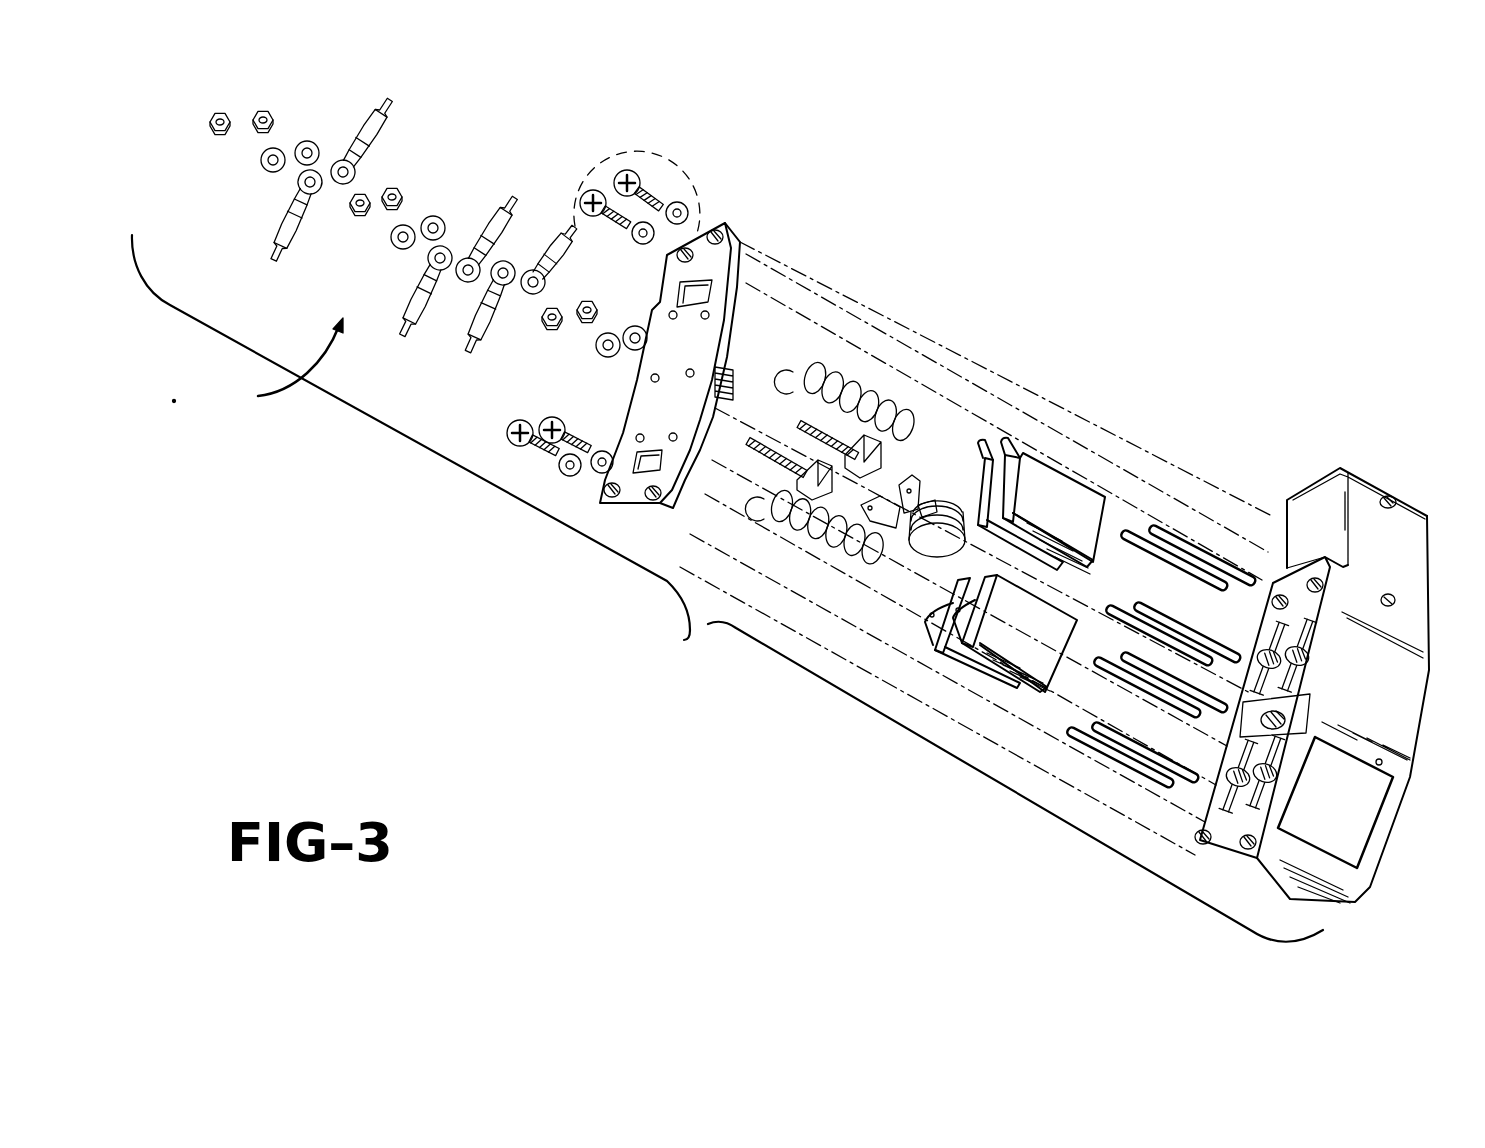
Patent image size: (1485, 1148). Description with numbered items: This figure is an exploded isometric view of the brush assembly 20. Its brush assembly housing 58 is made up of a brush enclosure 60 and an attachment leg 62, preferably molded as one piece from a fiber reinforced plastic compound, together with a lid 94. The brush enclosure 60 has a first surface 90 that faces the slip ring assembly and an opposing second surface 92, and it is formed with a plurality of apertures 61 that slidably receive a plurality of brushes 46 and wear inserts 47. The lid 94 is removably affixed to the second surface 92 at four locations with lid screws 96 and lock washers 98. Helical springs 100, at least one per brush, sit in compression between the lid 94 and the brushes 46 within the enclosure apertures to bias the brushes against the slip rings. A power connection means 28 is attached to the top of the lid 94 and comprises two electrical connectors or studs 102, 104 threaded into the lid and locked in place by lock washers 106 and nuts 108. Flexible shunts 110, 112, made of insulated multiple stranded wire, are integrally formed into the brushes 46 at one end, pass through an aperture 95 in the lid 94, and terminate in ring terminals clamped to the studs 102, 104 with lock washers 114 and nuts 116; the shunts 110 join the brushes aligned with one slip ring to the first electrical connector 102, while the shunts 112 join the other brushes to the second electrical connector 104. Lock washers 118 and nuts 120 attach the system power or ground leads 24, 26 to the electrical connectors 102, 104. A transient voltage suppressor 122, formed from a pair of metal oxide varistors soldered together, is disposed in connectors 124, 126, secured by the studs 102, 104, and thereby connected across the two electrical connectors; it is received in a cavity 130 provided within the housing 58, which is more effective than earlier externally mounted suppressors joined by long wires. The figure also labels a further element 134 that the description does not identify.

The brush assembly 20 is at (727, 588).
The system power or ground lead 24 is at (277, 240).
The system power or ground lead 26 is at (375, 121).
The power connection means 28 is at (277, 365).
The brushes 46 is at (1036, 497).
The wear inserts 47 is at (1160, 533).
The brush assembly housing 58 is at (1284, 652).
The brush enclosure 60 is at (1269, 696).
The apertures 61 is at (1297, 655).
The attachment leg 62 is at (1359, 475).
The first surface 90 is at (1363, 888).
The second surface 92 is at (1198, 833).
The lid 94 is at (708, 377).
The aperture 95 is at (632, 469).
The lid screws 96 is at (592, 200).
The lock washers 98 is at (662, 212).
The helical springs 100 is at (847, 378).
The first electrical connector 102 is at (752, 440).
The second electrical connector 104 is at (802, 423).
The lock washers 106 is at (632, 346).
The nuts 108 is at (585, 316).
The flexible shunts 110 is at (467, 281).
The flexible shunts 112 is at (534, 270).
The lock washers 114 is at (430, 236).
The nuts 116 is at (392, 189).
The lock washers 118 is at (300, 160).
The nuts 120 is at (258, 130).
The transient voltage suppressor 122 is at (927, 540).
The connector 124 is at (900, 485).
The connector 126 is at (925, 500).
The cavity 130 is at (1290, 725).
The mounting hole 134 is at (1393, 503).